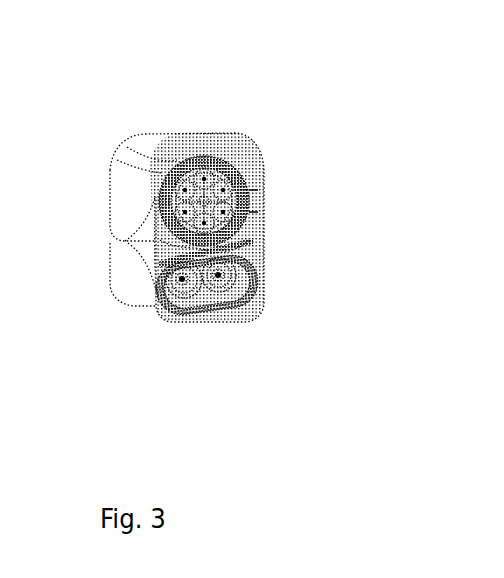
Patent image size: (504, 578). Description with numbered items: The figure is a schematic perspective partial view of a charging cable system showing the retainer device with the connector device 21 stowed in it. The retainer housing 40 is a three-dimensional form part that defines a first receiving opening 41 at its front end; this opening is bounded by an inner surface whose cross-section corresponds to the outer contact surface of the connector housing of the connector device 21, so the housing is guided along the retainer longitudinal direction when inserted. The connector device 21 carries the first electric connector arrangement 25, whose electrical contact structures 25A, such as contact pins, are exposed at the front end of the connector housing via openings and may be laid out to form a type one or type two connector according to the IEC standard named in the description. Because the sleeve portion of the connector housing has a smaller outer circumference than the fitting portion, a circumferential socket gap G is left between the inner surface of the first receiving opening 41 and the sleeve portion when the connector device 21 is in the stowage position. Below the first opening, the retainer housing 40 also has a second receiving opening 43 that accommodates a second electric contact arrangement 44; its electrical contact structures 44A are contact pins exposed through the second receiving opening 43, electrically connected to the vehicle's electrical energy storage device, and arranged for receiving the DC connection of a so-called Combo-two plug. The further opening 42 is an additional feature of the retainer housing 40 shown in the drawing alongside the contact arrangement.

The connector device 21 is at (170, 217).
The first electric connector arrangement 25 is at (193, 189).
The electrical contact structures 25A is at (205, 198).
The retainer housing 40 is at (203, 143).
The first receiving opening 41 is at (247, 175).
The circumferential socket gap G is at (257, 210).
The second cable 42 is at (158, 297).
The second receiving opening 43 is at (243, 302).
The second electric contact arrangement 44 is at (187, 300).
The electrical contact structures 44A is at (220, 276).